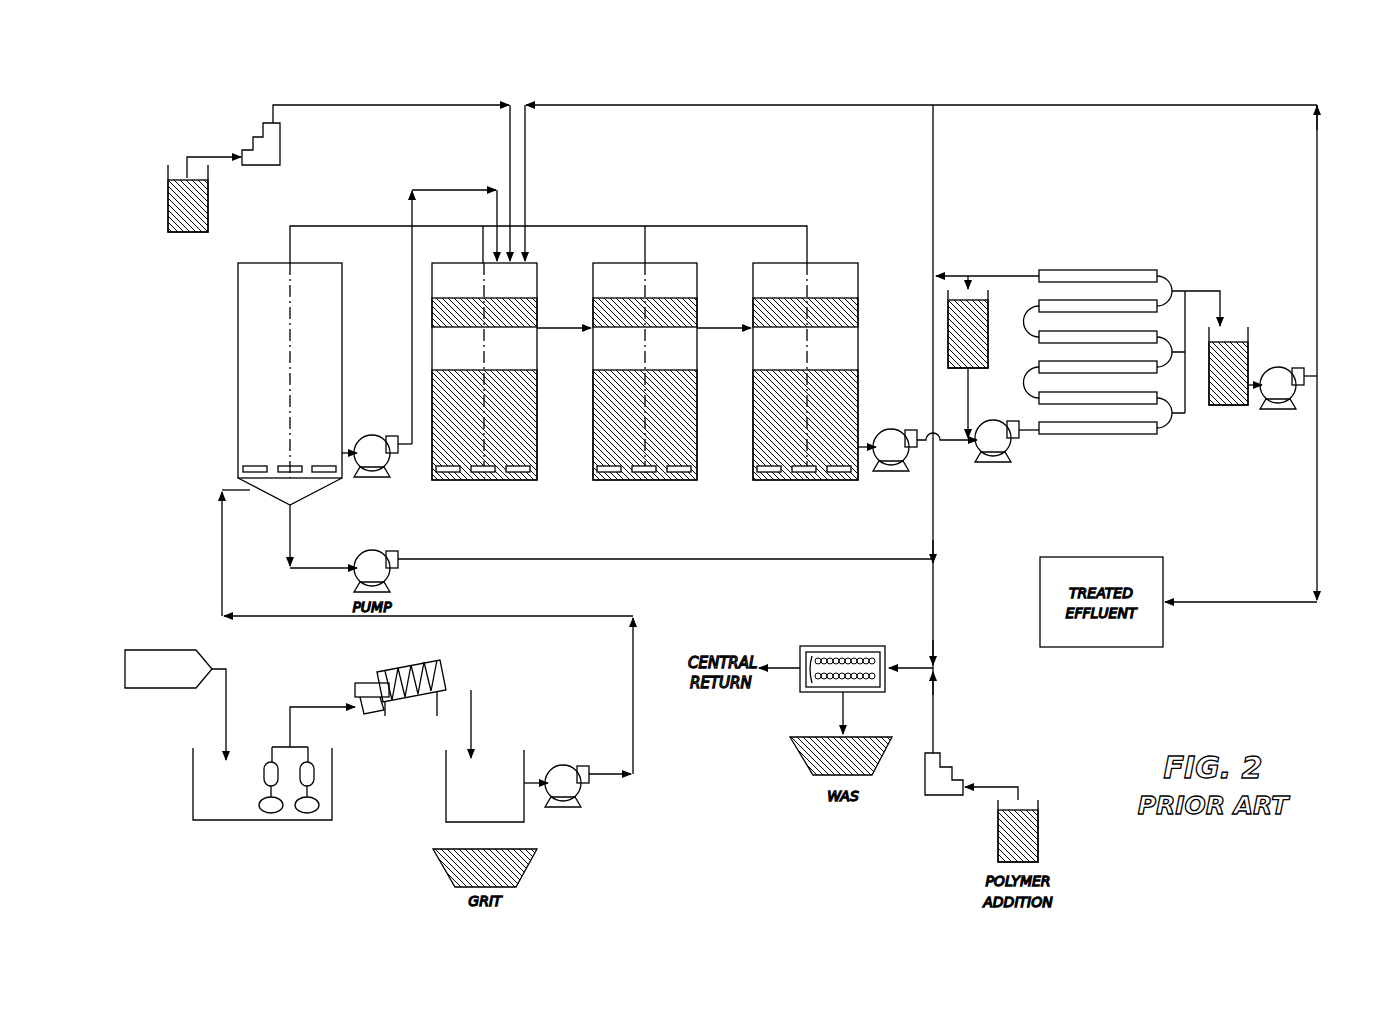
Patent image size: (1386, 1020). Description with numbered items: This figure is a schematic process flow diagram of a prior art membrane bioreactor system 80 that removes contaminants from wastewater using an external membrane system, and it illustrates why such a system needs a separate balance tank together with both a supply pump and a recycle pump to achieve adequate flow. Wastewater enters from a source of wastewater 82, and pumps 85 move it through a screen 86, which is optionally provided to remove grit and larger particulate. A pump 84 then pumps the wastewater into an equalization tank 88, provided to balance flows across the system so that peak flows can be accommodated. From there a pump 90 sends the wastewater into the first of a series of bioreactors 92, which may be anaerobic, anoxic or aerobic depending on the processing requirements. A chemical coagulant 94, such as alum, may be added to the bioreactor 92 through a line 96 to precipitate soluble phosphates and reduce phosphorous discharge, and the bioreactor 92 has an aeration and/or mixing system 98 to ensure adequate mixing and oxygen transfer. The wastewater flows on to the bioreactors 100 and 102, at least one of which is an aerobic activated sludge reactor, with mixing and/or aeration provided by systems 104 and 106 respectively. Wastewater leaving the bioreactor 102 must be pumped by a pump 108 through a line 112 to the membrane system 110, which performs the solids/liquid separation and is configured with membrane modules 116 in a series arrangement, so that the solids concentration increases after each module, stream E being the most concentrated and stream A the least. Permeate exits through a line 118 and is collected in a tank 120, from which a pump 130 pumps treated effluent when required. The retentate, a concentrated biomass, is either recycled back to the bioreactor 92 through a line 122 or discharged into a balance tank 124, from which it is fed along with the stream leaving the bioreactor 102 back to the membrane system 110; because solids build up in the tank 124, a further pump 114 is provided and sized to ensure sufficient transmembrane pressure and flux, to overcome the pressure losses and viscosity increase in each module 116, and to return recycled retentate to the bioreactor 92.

The MBR system 80 is at (194, 102).
The source of wastewater 82 is at (173, 650).
The pump 84 is at (578, 765).
The pumps 85 is at (307, 813).
The screen 86 is at (410, 663).
The equalization tank 88 is at (237, 382).
The pump 90 is at (385, 434).
The bioreactor 92 is at (501, 381).
The chemical coagulant 94 is at (162, 200).
The line 96 is at (392, 104).
The aeration and/or mixing system 98 is at (518, 482).
The bioreactor 100 is at (667, 381).
The bioreactor 102 is at (828, 379).
The mixing and/or aeration system 104 is at (678, 482).
The mixing and/or aeration system 106 is at (838, 482).
The pump 108 is at (905, 430).
The membrane system 110 is at (1097, 317).
The line 112 is at (950, 448).
The pump 114 is at (1013, 448).
The membrane modules 116 is at (1055, 270).
The line 118 is at (1223, 308).
The tank 120 is at (1250, 352).
The line 122 is at (831, 104).
The balance tank 124 is at (990, 310).
The pump 130 is at (1292, 364).